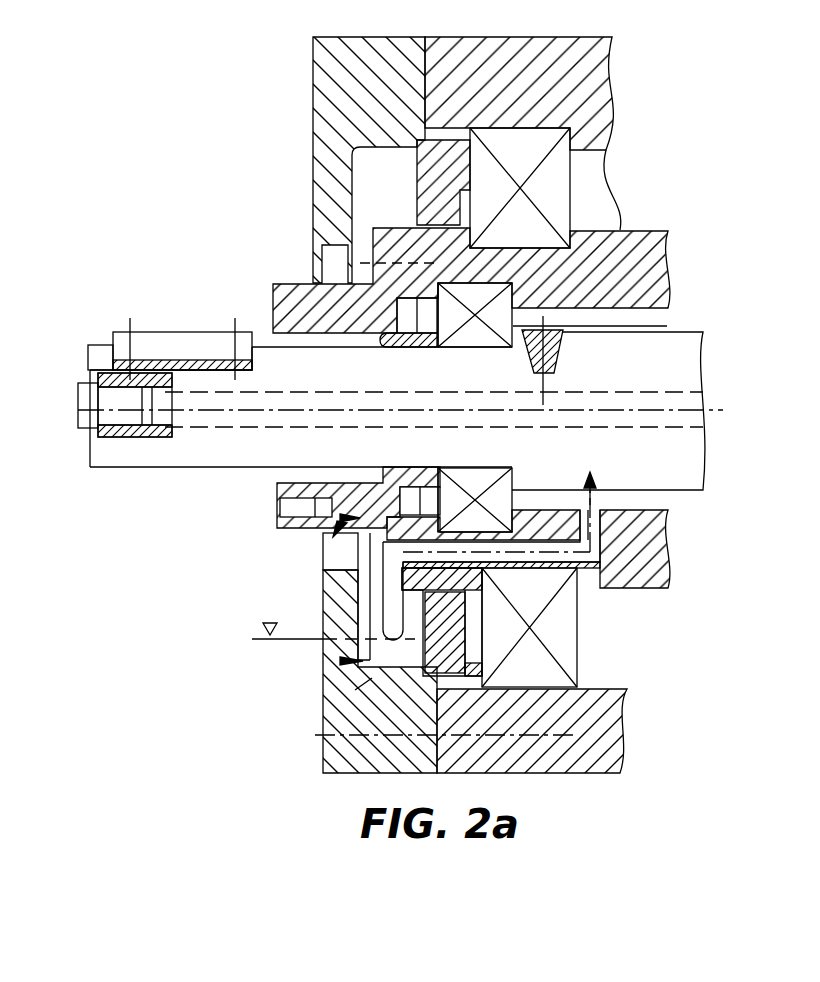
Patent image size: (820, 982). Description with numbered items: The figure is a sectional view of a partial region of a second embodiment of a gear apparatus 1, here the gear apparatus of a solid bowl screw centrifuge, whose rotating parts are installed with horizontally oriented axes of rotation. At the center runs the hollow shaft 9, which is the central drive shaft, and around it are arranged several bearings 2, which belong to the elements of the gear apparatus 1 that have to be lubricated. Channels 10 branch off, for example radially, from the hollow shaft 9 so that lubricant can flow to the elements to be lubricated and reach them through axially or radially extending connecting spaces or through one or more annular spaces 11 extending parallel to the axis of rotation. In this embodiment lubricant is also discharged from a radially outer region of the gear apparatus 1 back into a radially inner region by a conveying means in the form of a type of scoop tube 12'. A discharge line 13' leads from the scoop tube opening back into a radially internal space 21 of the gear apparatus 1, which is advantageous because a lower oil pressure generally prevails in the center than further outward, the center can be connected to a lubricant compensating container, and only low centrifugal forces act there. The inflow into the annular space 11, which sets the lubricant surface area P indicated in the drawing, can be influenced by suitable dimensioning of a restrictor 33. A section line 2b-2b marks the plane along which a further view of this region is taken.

The gear apparatus 1 is at (655, 184).
The bearings 2 is at (540, 183).
The hollow shaft 9 is at (180, 443).
The channels 10 is at (548, 375).
The annular space 11 is at (413, 653).
The scoop tube 12' is at (273, 611).
The discharge line 13' is at (562, 587).
The radially internal space 21 is at (617, 505).
The restrictor 33 is at (448, 643).
The section line 2b is at (364, 603).
The lubricant surface area P is at (323, 619).